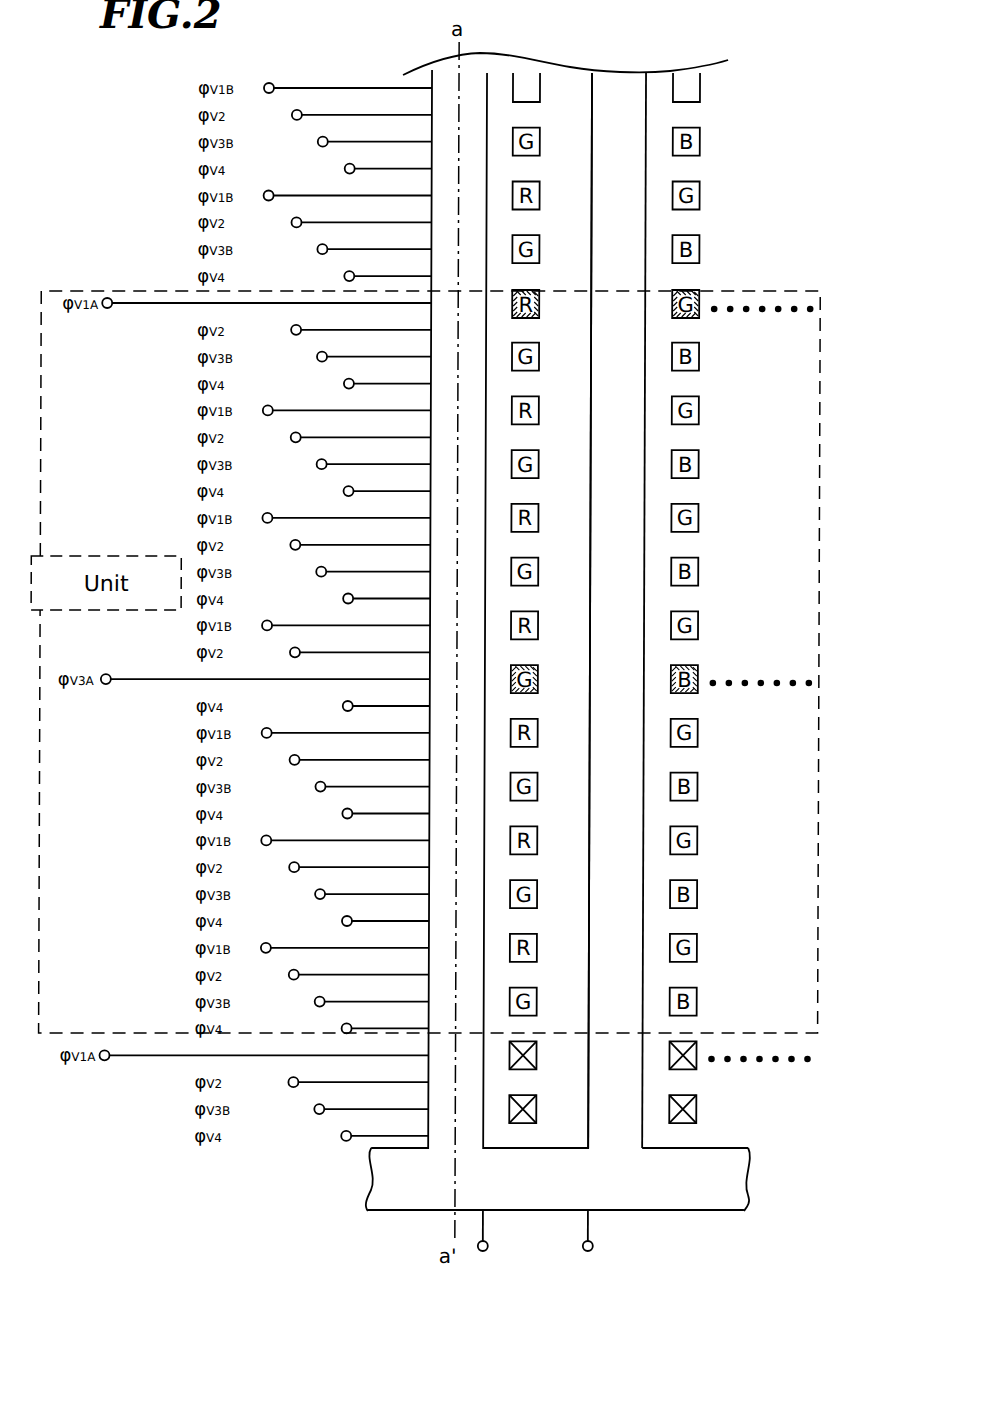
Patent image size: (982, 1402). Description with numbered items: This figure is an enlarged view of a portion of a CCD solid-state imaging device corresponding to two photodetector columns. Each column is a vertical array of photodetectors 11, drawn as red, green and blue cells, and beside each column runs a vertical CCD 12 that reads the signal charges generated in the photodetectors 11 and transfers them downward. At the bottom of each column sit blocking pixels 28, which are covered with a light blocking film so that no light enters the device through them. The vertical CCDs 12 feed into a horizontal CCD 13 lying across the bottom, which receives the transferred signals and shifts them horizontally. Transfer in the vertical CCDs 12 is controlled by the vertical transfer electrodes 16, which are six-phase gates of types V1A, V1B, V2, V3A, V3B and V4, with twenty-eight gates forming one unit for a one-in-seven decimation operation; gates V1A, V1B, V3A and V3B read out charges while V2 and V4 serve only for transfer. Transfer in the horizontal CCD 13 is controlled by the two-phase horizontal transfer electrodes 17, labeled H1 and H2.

The photodetector 11 is at (690, 128).
The vertical CCD 12 is at (616, 120).
The horizontal CCD 13 is at (632, 1193).
The vertical transfer electrodes 16 is at (197, 69).
The horizontal transfer electrodes 17 is at (614, 1279).
The blocking pixel 28 is at (676, 1092).